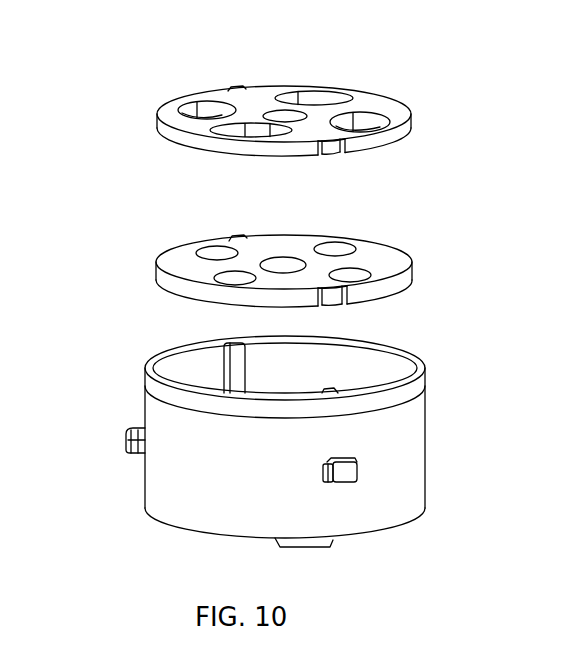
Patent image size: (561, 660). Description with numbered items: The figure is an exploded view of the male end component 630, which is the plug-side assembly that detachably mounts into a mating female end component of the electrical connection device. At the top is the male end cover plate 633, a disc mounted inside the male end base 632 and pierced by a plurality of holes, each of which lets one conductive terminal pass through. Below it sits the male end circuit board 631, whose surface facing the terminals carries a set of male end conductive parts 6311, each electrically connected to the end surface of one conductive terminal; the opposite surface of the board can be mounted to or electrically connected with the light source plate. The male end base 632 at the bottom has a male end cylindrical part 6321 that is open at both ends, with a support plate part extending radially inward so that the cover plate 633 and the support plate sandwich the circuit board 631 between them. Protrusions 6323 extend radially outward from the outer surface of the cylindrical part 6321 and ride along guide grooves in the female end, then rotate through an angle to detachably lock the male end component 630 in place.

The male end component 630 is at (126, 42).
The male end cover plate 633 is at (172, 117).
The male end circuit board 631 is at (268, 256).
The male end conductive part 6311 is at (360, 273).
The male end base 632 is at (226, 444).
The male end cylindrical part 6321 is at (145, 500).
The protrusion 6323 is at (133, 432).